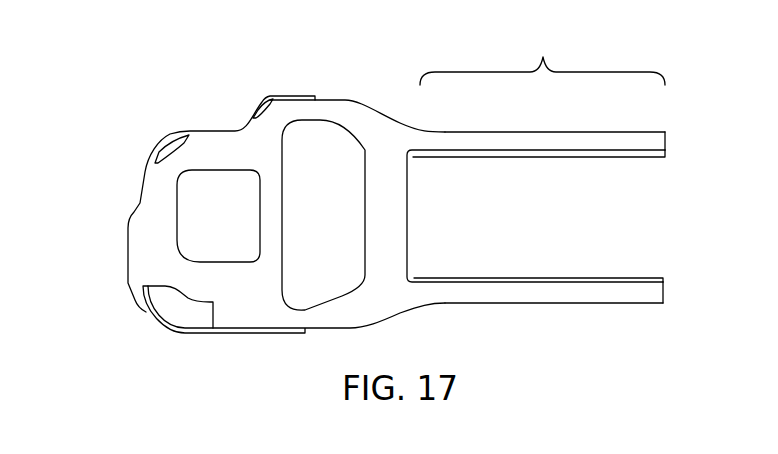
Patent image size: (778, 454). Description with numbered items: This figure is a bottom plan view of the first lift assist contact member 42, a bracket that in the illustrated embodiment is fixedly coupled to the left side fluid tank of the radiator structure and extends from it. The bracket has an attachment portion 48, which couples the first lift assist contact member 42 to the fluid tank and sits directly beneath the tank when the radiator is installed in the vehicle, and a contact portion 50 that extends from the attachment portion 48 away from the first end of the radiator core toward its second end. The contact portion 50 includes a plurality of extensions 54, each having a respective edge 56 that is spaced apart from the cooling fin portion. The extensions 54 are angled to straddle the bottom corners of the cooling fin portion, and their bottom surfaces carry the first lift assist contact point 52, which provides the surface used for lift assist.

The first lift assist contact member 42 is at (108, 263).
The attachment portion 48 is at (227, 125).
The contact portion 50 is at (542, 55).
The first lift assist contact point 52 is at (465, 140).
The extensions 54 is at (667, 142).
The edge 56 is at (636, 153).